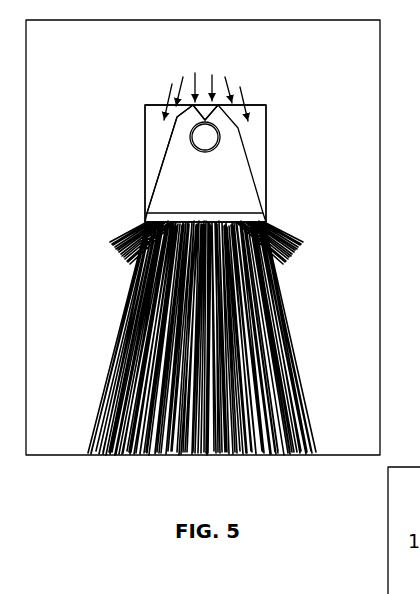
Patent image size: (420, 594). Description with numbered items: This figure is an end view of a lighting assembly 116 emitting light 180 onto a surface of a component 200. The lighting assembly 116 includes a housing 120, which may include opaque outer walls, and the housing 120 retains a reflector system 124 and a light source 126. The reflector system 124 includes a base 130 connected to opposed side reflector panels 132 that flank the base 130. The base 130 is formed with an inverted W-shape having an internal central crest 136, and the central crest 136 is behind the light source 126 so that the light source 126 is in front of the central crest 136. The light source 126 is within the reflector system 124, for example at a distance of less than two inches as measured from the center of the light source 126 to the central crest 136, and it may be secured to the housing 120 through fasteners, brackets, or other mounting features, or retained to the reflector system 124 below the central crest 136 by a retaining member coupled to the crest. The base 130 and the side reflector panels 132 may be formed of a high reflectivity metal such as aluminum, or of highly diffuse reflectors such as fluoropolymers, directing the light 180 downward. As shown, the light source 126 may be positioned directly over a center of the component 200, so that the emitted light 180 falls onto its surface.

The lighting assembly 116 is at (125, 105).
The housing 120 is at (268, 115).
The reflector system 124 is at (168, 141).
The light source 126 is at (220, 127).
The base 130 is at (176, 106).
The side reflector panels 132 is at (165, 157).
The central crest 136 is at (206, 119).
The light 180 is at (270, 318).
The component 200 is at (199, 457).